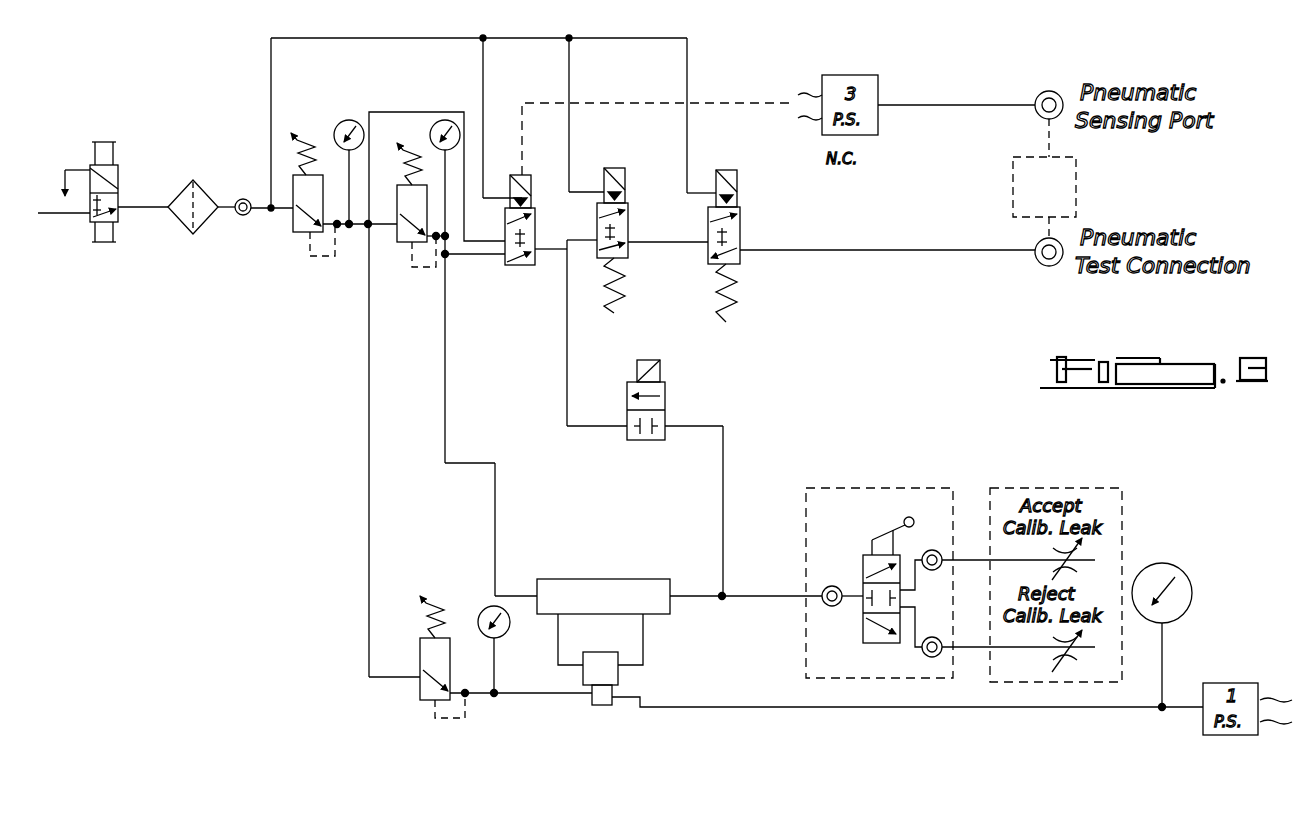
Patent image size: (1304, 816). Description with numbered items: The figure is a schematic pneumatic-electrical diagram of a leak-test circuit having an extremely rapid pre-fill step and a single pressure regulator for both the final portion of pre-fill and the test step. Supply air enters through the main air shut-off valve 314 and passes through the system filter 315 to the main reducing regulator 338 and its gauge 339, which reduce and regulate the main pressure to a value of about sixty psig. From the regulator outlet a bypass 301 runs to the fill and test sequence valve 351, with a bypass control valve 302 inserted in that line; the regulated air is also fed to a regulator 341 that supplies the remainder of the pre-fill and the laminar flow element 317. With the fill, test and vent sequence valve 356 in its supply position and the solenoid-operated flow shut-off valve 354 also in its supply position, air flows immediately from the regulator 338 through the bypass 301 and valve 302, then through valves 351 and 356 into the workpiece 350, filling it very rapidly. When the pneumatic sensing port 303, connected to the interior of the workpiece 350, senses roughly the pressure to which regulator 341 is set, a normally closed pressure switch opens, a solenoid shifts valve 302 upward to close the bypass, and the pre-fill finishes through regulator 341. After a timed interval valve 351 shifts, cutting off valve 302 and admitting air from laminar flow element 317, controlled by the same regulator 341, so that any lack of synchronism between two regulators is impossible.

The main air shut-off valve 314 is at (118, 190).
The system filter 315 is at (180, 228).
The main reducing regulator 338 is at (300, 228).
The gauge 339 is at (349, 120).
The bypass 301 is at (410, 112).
The regulator 341 is at (405, 242).
The bypass control valve 302 is at (535, 216).
The fill and test sequence valve 351 is at (628, 222).
The fill, test and vent sequence valve 356 is at (740, 230).
The pneumatic sensing port 303 is at (1052, 91).
The workpiece 350 is at (1078, 173).
The solenoid-operated flow shut-off valve 354 is at (665, 418).
The laminar flow element 317 is at (557, 579).